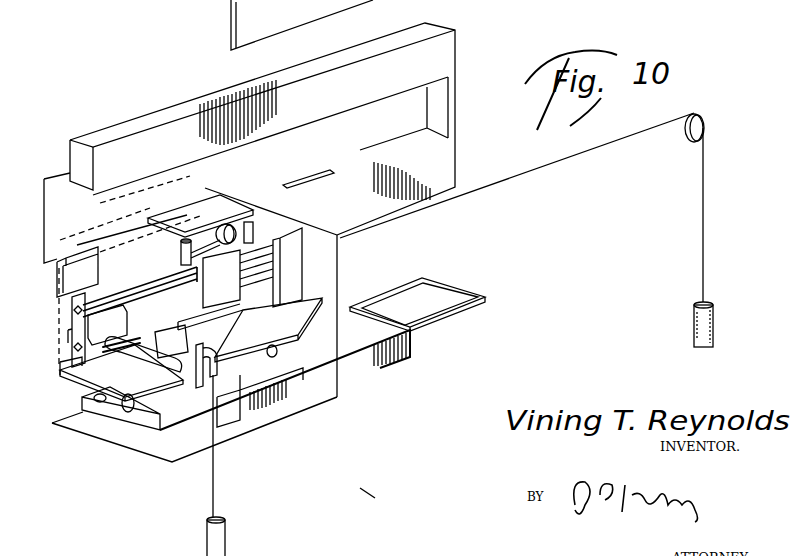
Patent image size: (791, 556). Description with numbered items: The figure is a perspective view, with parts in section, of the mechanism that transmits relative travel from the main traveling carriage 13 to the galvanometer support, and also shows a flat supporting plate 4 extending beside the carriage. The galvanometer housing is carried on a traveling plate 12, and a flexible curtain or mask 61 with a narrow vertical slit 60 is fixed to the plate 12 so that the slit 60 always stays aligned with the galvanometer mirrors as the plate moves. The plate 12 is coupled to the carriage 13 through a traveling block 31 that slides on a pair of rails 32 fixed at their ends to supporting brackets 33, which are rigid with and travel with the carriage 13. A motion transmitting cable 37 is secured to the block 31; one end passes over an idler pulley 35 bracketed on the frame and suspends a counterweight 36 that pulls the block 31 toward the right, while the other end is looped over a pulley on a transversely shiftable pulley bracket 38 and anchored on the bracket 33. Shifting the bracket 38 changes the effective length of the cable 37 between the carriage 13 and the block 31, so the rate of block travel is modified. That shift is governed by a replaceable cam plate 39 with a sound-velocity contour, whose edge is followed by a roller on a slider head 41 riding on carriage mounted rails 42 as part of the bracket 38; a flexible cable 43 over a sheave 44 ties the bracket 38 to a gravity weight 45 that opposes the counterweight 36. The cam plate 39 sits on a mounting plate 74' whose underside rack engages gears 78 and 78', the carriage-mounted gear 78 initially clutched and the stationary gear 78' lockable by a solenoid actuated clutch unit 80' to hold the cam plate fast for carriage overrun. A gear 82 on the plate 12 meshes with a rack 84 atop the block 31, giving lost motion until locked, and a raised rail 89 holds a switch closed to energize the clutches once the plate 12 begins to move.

The support plate 4 is at (452, 318).
The traveling plate 12 is at (173, 213).
The traveling carriage 13 is at (372, 368).
The traveling block 31 is at (273, 263).
The rails 32 is at (150, 282).
The supporting brackets 33 is at (67, 327).
The idler pulley 35 is at (695, 142).
The counterweight 36 is at (714, 318).
The motion transmitting cable 37 is at (582, 152).
The pulley bracket 38 is at (150, 310).
The cam plate 39 is at (60, 369).
The slider head 41 is at (142, 370).
The carriage mounted rails 42 is at (68, 342).
The flexible cable 43 is at (213, 463).
The sheave 44 is at (218, 347).
The gravity weight 45 is at (226, 537).
The vertical slit 60 is at (175, 183).
The flexible curtain or mask 61 is at (56, 193).
The mounting plate 74' is at (269, 330).
The gear 78 is at (295, 349).
The gear 78' is at (134, 405).
The solenoid actuated clutch unit 80' is at (90, 408).
The gear 82 is at (262, 224).
The rack 84 is at (181, 250).
The raised rail 89 is at (283, 183).